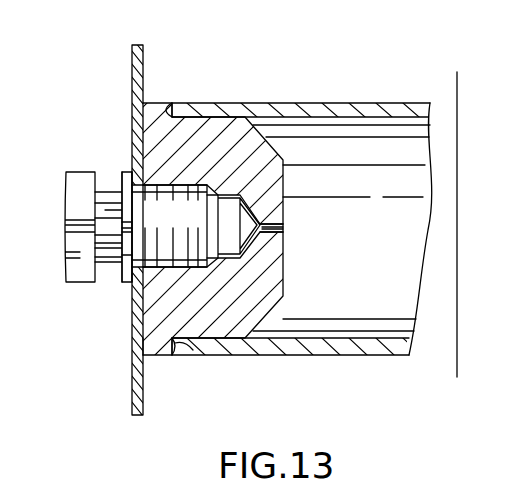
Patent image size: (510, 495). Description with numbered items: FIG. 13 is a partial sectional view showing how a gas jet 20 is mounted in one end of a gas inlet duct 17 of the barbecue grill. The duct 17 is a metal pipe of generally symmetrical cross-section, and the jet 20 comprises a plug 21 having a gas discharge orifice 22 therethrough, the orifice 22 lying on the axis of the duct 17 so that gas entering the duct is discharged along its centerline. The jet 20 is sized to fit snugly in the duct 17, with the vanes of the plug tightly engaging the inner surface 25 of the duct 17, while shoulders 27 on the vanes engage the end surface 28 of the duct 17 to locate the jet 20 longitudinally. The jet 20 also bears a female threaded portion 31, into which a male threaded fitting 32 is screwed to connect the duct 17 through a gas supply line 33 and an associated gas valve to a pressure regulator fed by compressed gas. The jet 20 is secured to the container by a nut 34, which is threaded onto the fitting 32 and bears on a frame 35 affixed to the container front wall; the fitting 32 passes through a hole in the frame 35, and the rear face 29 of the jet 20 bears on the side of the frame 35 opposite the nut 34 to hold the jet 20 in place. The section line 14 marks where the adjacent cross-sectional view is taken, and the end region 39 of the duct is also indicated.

The section line 14- 14 is at (457, 72).
The gas inlet duct 17 is at (330, 103).
The gas jet 20 is at (286, 174).
The plug 21 is at (230, 102).
The gas discharge orifice 22 is at (283, 228).
The inner surface of duct 25 is at (366, 340).
The shoulder 27 is at (188, 354).
The end surface of duct 28 is at (128, 185).
The rear face of jet 29 is at (150, 128).
The female threaded portion 31 is at (143, 348).
The male threaded fitting 32 is at (160, 185).
The gas supply line 33 is at (80, 282).
The nut 34 is at (126, 283).
The frame 35 is at (132, 63).
The housing end 39 is at (157, 116).